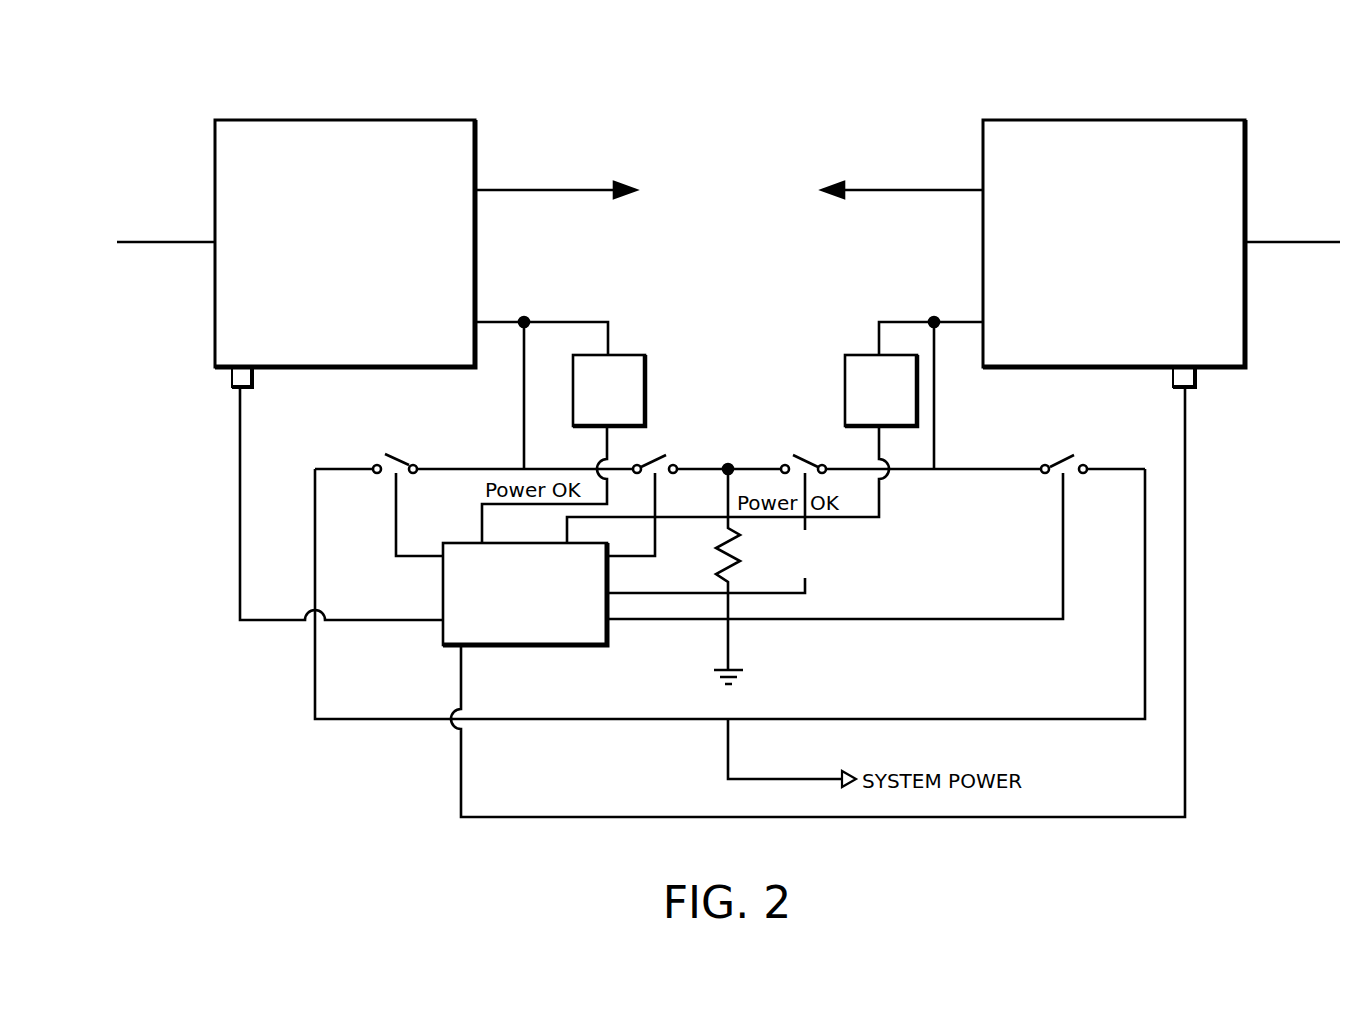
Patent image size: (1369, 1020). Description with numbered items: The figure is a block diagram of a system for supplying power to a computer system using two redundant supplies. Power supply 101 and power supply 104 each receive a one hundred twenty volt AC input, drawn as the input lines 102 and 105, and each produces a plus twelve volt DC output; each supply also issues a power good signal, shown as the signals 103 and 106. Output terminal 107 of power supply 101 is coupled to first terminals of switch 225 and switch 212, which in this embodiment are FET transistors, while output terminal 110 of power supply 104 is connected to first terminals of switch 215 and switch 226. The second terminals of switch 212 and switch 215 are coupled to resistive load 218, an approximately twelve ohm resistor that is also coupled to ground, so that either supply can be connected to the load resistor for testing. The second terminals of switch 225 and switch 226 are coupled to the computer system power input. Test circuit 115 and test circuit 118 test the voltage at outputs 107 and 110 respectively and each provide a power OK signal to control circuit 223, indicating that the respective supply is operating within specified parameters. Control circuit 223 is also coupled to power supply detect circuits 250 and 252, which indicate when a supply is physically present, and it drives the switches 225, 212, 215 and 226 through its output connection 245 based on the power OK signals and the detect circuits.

The power supply 101 is at (345, 118).
The power supply 104 is at (1115, 118).
The 120VAC input of first power supply 102 is at (182, 246).
The 120VAC input of second power supply 105 is at (1278, 246).
The Power Good signal of first power supply 103 is at (538, 193).
The Power Good signal of second power supply 106 is at (908, 193).
The output terminal 107 is at (500, 320).
The output terminal 110 is at (958, 320).
The test circuit 115 is at (648, 378).
The test circuit 118 is at (843, 378).
The switch 212 is at (660, 452).
The switch 215 is at (801, 452).
The resistive load 218 is at (720, 566).
The control circuit 223 is at (525, 594).
The switch 225 is at (388, 474).
The switch 226 is at (1079, 474).
The controller output line 245 is at (560, 648).
The power supply detect circuit 250 is at (228, 377).
The power supply detect circuit 252 is at (1198, 377).